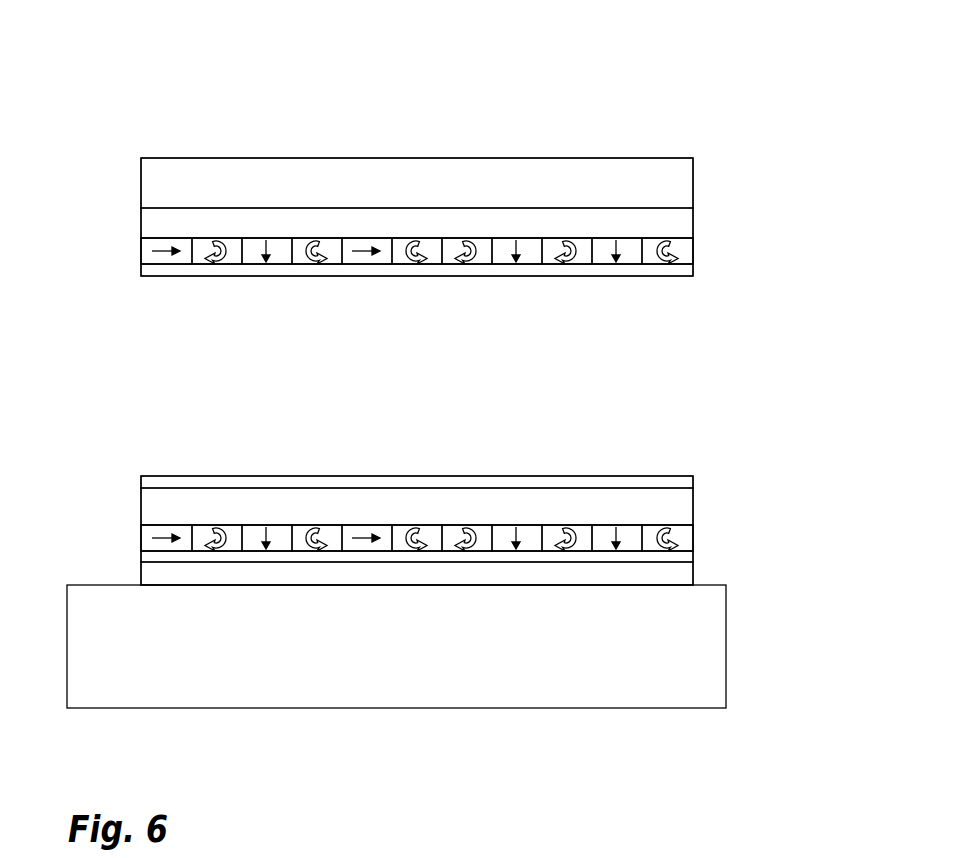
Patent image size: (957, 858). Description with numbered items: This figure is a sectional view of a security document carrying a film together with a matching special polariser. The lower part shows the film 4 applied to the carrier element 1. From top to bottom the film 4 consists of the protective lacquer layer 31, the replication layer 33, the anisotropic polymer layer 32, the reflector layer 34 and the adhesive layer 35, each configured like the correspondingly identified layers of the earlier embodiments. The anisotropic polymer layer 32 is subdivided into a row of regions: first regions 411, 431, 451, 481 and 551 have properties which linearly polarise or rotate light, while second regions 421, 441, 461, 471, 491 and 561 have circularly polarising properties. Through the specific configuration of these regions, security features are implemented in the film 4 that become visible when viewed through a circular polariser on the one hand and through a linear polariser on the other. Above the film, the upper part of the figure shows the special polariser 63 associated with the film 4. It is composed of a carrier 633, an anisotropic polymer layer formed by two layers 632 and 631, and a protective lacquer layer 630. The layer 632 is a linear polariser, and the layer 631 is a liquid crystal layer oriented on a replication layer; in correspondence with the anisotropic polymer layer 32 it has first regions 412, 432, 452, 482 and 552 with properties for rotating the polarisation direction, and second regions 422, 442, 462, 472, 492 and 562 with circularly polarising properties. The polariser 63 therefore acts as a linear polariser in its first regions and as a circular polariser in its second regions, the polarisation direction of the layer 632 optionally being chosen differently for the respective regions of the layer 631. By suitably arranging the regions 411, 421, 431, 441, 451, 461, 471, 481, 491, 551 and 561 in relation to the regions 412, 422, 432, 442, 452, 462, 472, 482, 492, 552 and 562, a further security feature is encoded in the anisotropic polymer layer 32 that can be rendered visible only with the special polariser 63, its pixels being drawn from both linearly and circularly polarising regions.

The carrier element 1 is at (537, 698).
The film 4 is at (444, 495).
The protective lacquer layer 31 is at (688, 475).
The anisotropic polymer layer 32 is at (688, 535).
The replication layer 33 is at (688, 508).
The reflector layer 34 is at (685, 553).
The adhesive layer 35 is at (685, 570).
The polariser 63 is at (438, 163).
The protective lacquer layer 630 is at (688, 271).
The liquid crystal layer 631 is at (688, 255).
The linear polariser layer 632 is at (688, 225).
The carrier 633 is at (688, 172).
The first region 411 is at (178, 527).
The second region 421 is at (229, 527).
The first region 431 is at (277, 527).
The second region 441 is at (327, 527).
The first region 451 is at (358, 527).
The second region 461 is at (427, 527).
The second region 471 is at (485, 527).
The first region 481 is at (527, 527).
The second region 491 is at (583, 527).
The first region 551 is at (605, 527).
The second region 561 is at (678, 527).
The first region 412 is at (170, 240).
The second region 422 is at (230, 240).
The first region 432 is at (252, 240).
The region 442 is at (327, 240).
The first region 452 is at (352, 240).
The second region 462 is at (428, 240).
The second region 472 is at (447, 240).
The first region 482 is at (525, 240).
The second region 492 is at (548, 240).
The first region 552 is at (627, 240).
The second region 562 is at (648, 240).